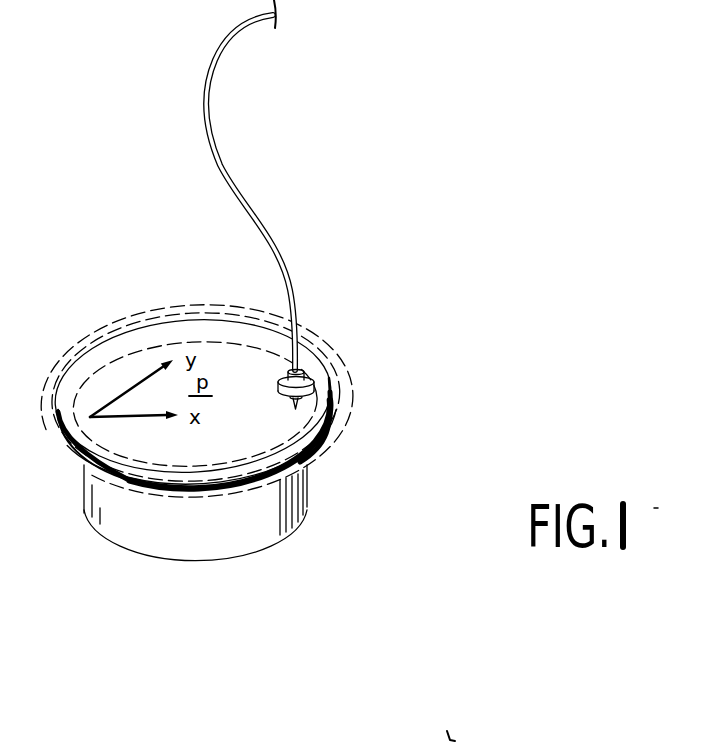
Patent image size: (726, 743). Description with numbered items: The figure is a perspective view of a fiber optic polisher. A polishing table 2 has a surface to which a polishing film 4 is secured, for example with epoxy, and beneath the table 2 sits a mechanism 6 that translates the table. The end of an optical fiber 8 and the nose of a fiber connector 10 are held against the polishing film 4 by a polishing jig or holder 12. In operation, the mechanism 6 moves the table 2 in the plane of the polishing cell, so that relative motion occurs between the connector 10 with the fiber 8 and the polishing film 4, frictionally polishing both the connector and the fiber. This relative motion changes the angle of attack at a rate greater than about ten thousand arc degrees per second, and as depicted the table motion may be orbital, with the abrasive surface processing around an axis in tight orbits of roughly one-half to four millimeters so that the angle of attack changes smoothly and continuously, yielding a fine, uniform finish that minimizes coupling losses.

The polishing table 2 is at (305, 463).
The polishing film 4 is at (137, 342).
The mechanism 6 is at (268, 509).
The optical fiber 8 is at (204, 84).
The fiber connector 10 is at (281, 371).
The polishing jig or holder 12 is at (280, 392).